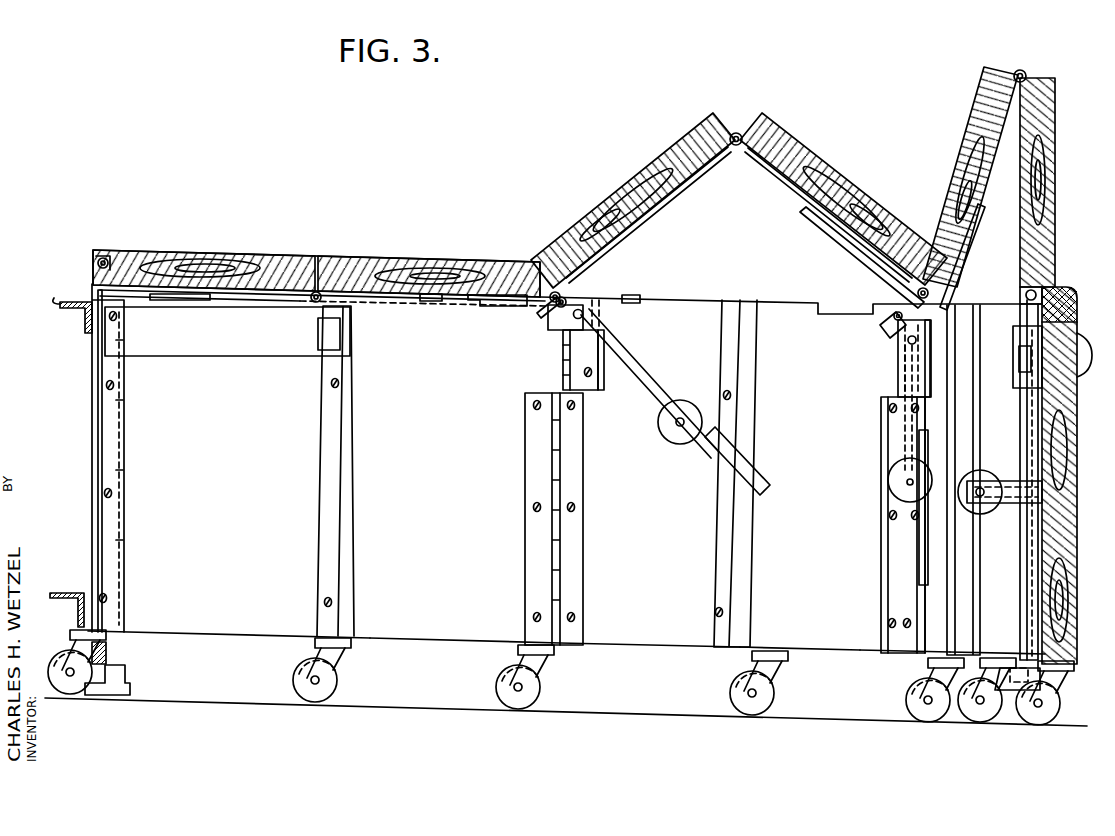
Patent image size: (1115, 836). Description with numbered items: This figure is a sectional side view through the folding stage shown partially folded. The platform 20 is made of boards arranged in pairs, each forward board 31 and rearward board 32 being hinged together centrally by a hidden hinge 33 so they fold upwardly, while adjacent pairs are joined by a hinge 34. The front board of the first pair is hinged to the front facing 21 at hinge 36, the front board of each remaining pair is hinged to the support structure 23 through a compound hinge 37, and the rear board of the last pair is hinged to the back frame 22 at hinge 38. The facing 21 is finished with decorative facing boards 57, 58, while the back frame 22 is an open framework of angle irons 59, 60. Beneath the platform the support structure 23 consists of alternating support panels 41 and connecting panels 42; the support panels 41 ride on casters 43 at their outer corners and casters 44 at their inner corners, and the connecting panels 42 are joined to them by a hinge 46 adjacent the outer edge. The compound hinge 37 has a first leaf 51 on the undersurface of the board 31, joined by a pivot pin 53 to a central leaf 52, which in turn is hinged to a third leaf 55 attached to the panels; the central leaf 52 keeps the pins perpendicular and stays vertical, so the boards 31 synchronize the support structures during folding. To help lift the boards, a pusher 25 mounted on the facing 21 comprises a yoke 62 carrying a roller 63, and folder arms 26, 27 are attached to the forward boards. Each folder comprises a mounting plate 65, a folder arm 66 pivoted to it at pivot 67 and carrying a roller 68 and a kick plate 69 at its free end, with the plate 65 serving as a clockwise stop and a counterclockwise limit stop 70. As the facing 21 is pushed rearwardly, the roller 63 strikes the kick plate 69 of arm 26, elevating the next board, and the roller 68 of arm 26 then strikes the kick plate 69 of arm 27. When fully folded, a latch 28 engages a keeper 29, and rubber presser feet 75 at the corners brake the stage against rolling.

The platform 20 is at (444, 249).
The front facing 21 is at (1078, 312).
The back frame 22 is at (90, 358).
The support structure 23 is at (711, 294).
The pusher 25 is at (1010, 475).
The folder arm 26 is at (905, 513).
The folder arm 27 is at (672, 398).
The latch 28 is at (1014, 370).
The keeper 29 is at (300, 350).
The forward board 31 is at (350, 256).
The rearward board 32 is at (212, 254).
The hinge 33 is at (308, 298).
The hinge 34 is at (551, 290).
The hinge 36 is at (1022, 296).
The compound hinge 37 is at (560, 368).
The hinge 38 is at (103, 258).
The support panel 41 is at (240, 622).
The connecting panel 42 is at (430, 628).
The caster 43 is at (70, 655).
The caster 44 is at (292, 680).
The hinge 46 is at (100, 413).
The first leaf 51 is at (488, 302).
The central leaf 52 is at (560, 354).
The pivot pin 53 is at (576, 300).
The third leaf 55 is at (604, 388).
The facing board 57 is at (1074, 434).
The facing board 58 is at (1065, 578).
The angle iron 59 is at (72, 302).
The angle iron 60 is at (73, 595).
The yoke 62 is at (1014, 500).
The roller 63 is at (975, 475).
The mounting plate 65 is at (436, 300).
The folder arm 66 is at (648, 385).
The pivot 67 is at (598, 318).
The roller 68 is at (670, 434).
The kick plate 69 is at (762, 480).
The counterclockwise limit stop 70 is at (552, 332).
The presser foot 75 is at (120, 690).